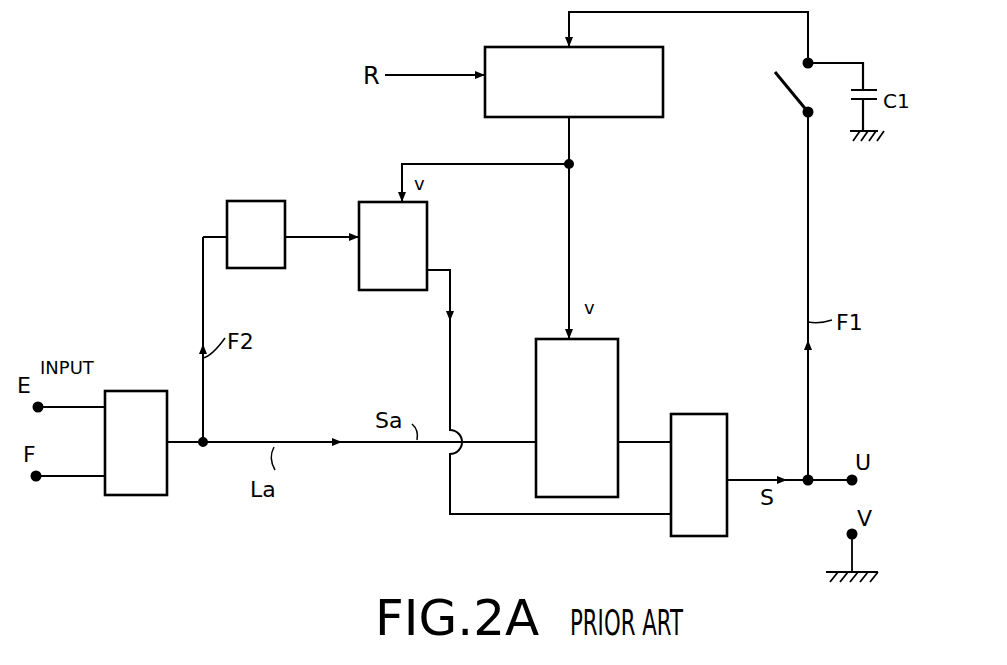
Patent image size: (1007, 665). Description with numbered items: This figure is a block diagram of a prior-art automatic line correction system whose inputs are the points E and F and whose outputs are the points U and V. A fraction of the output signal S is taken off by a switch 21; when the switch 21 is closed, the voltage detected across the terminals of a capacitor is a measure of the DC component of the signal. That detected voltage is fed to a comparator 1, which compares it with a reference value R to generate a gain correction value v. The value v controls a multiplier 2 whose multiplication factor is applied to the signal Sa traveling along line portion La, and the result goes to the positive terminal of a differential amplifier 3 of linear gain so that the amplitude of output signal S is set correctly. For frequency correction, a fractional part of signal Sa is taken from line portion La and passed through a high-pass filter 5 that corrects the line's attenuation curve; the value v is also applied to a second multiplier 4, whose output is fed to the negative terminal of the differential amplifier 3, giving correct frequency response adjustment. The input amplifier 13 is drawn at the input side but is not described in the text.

The comparator 1 is at (648, 94).
The multiplier 2 is at (605, 365).
The differential amplifier 3 is at (713, 522).
The multiplier 4 is at (375, 215).
The high-pass filter 5 is at (240, 215).
The differential amplifier G1 13 is at (112, 488).
The switch 21 is at (790, 96).